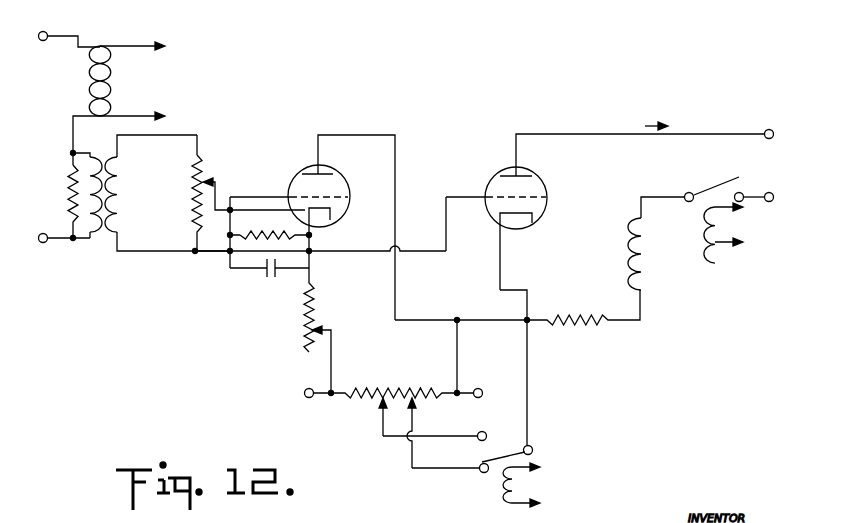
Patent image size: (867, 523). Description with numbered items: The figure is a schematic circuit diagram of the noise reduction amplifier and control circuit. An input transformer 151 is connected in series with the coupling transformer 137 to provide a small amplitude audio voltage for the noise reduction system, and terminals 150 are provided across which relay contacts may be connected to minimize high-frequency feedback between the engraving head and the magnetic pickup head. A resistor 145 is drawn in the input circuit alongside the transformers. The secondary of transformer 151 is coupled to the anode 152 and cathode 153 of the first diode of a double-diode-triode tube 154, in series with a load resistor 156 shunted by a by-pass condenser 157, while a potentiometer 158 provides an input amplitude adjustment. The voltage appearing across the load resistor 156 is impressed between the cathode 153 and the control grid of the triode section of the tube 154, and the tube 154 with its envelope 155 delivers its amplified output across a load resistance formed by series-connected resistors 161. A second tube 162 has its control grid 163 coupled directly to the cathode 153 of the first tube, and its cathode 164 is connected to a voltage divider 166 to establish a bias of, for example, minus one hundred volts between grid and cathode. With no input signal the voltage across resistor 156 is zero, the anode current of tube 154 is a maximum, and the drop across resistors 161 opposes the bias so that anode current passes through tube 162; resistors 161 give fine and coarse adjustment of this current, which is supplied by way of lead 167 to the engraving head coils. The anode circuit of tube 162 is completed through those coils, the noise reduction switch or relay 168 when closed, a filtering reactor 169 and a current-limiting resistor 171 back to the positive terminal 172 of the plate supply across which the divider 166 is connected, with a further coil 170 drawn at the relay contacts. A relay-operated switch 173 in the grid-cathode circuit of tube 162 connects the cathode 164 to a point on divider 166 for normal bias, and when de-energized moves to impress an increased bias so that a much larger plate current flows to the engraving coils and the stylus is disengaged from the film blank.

The coupling transformer 137 is at (98, 45).
The terminals 150 is at (41, 41).
The resistor 145 is at (70, 197).
The input transformer 151 is at (100, 237).
The potentiometer 158 is at (207, 184).
The anode 152 is at (290, 206).
The cathode 153 is at (337, 221).
The double-diode-triode tube 154 is at (305, 171).
The electron tube 155 is at (346, 188).
The load resistor 156 is at (232, 270).
The by-pass condenser 157 is at (267, 282).
The series-connected resistors 161 is at (313, 299).
The second tube 162 is at (495, 180).
The control grid 163 is at (529, 196).
The cathode 164 is at (526, 224).
The voltage divider 166 is at (365, 392).
The lead 167 is at (692, 133).
The noise reduction switch or relay 168 is at (712, 187).
The filtering reactor 169 is at (628, 261).
The relay coil 170 is at (716, 250).
The current-limiting resistor 171 is at (591, 323).
The positive terminal 172 is at (483, 397).
The relay-operated switch 173 is at (506, 452).